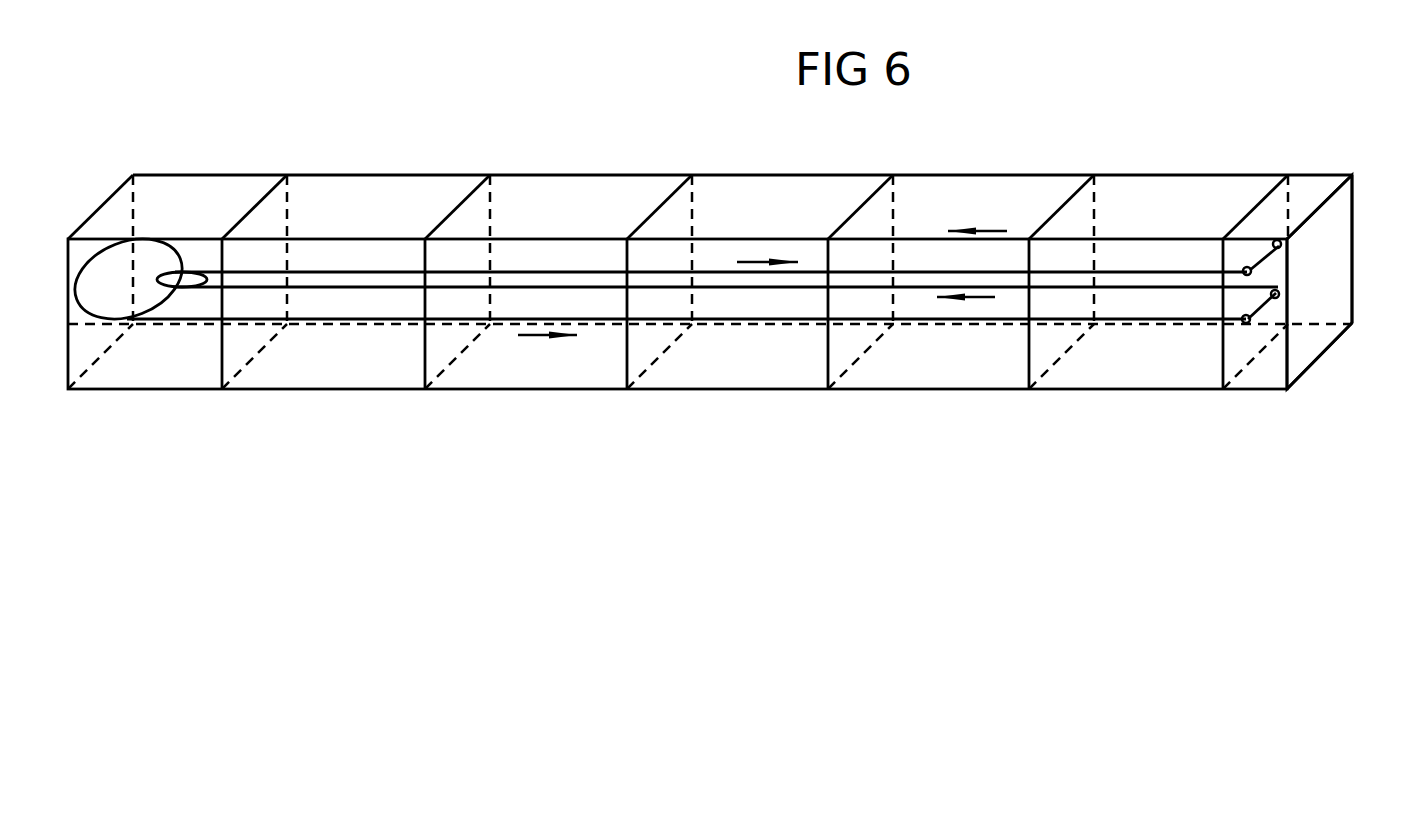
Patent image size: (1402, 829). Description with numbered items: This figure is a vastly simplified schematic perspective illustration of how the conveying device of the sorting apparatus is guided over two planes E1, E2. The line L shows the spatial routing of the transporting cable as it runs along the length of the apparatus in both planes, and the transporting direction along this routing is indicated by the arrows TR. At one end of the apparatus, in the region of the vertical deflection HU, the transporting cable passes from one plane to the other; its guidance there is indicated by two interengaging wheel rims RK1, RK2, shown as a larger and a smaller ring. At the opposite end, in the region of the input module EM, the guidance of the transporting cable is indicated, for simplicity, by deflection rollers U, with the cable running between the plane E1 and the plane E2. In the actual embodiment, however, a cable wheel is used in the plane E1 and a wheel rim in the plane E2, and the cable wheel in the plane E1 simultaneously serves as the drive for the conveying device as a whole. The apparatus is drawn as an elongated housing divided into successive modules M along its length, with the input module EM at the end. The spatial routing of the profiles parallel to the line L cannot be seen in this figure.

The vertical deflection HU is at (100, 195).
The module M is at (413, 163).
The input module EM is at (1322, 370).
The line L is at (913, 322).
The wheel rim RK1 is at (82, 319).
The wheel rim RK2 is at (180, 287).
The deflection rollers U is at (1277, 243).
The plane E1 is at (1273, 311).
The plane E2 is at (1273, 262).
The transporting direction TR is at (756, 262).